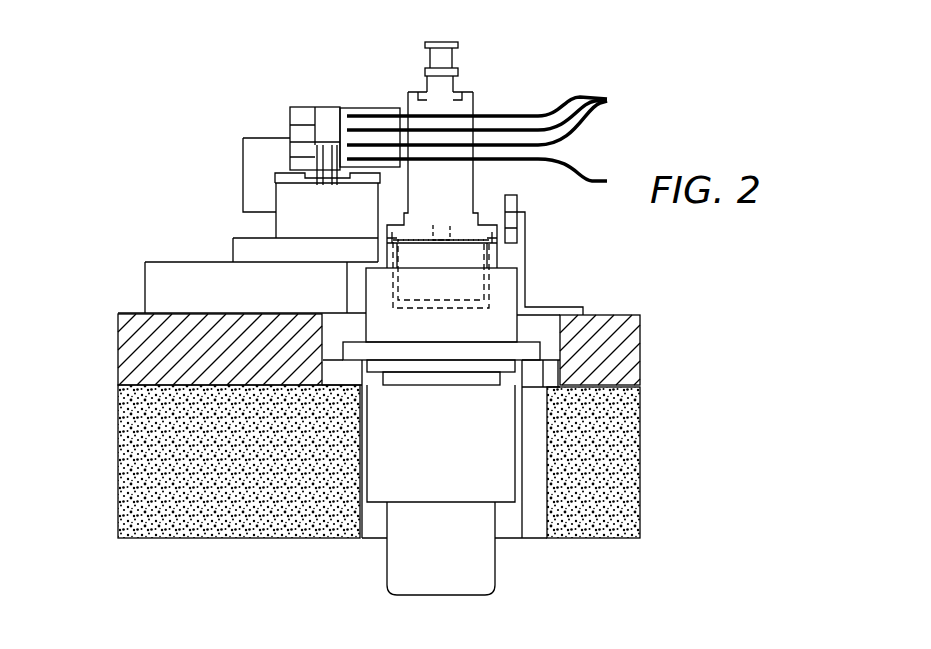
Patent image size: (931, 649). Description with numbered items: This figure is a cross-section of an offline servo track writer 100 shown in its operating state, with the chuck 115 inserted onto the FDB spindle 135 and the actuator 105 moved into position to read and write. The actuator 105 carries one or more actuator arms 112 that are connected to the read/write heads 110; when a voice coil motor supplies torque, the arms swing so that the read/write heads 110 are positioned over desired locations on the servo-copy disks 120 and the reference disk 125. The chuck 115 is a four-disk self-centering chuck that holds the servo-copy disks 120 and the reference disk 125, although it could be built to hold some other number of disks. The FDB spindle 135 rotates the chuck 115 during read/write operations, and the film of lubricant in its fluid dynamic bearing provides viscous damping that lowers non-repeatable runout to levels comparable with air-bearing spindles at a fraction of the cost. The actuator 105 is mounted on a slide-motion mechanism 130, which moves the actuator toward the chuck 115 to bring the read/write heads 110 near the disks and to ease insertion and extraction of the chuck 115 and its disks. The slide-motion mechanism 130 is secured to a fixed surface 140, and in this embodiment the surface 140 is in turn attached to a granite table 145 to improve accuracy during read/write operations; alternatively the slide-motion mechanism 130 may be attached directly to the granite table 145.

The servo track writer 100 is at (146, 163).
The actuator 105 is at (327, 123).
The read/write heads 110 is at (424, 117).
The actuator arms 112 is at (398, 165).
The chuck 115 is at (455, 60).
The servo-copy disks 120 is at (497, 117).
The reference disk 125 is at (497, 176).
The slide-motion mechanism 130 is at (165, 290).
The FDB spindle 135 is at (440, 462).
The fixed surface 140 is at (148, 360).
The granite table 145 is at (152, 479).